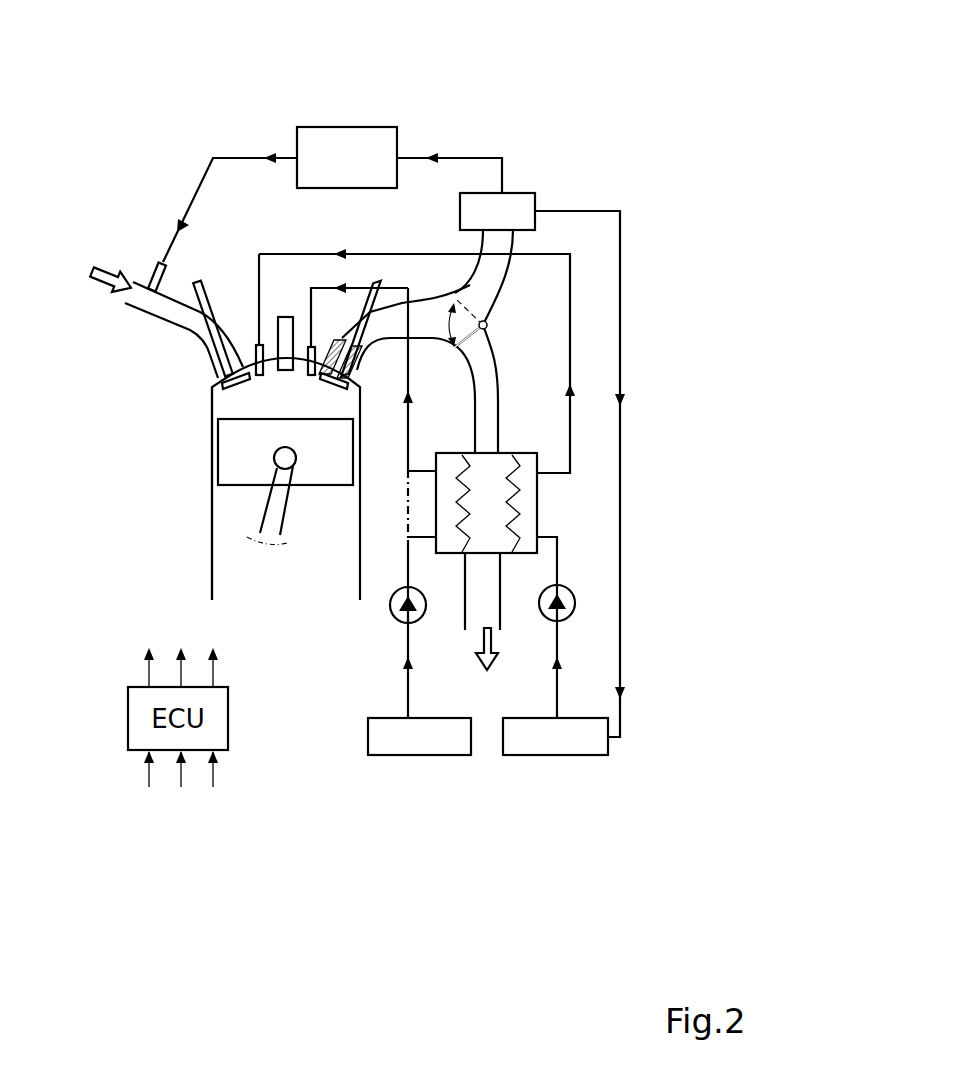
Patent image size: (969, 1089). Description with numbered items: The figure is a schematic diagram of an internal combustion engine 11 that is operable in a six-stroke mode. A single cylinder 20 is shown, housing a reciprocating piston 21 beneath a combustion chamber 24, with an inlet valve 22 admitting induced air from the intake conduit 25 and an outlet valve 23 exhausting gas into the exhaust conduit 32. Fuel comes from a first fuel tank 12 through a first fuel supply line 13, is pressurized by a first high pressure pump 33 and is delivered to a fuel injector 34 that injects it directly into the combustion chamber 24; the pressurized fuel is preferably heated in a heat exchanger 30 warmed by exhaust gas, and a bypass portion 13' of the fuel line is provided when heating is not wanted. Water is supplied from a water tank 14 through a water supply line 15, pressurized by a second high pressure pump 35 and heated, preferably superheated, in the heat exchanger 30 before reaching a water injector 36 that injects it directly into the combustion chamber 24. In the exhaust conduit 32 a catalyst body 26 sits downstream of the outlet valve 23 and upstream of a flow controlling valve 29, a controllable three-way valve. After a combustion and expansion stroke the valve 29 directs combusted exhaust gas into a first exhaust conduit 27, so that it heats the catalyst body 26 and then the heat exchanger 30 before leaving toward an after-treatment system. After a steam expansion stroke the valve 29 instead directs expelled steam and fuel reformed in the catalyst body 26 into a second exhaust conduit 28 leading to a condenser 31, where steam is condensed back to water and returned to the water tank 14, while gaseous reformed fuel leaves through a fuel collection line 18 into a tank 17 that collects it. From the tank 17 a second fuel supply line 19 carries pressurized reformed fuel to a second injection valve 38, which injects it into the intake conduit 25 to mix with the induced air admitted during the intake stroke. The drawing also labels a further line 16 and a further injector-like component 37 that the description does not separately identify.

The internal combustion engine 11 is at (568, 80).
The first fuel tank 12 is at (421, 748).
The first fuel supply line 13 is at (374, 507).
The bypass portion 13' is at (354, 553).
The water tank 14 is at (563, 745).
The water supply line 15 is at (600, 210).
The return line 16 is at (557, 686).
The tank 17 is at (370, 128).
The fuel collection line 18 is at (458, 158).
The second fuel supply line 19 is at (245, 155).
The cylinder 20 is at (183, 509).
The piston 21 is at (233, 459).
The inlet valve 22 is at (220, 346).
The outlet valve 23 is at (455, 298).
The combustion chamber 24 is at (233, 402).
The intake conduit 25 is at (153, 318).
The catalyst body 26 is at (357, 369).
The first exhaust conduit 27 is at (487, 413).
The second exhaust conduit 28 is at (500, 243).
The flow controlling valve 29 is at (500, 325).
The heat exchanger 30 is at (537, 505).
The condenser 31 is at (515, 200).
The exhaust conduit 32 is at (402, 334).
The first high pressure pump 33 is at (390, 610).
The fuel injector 34 is at (287, 333).
The second high pressure pump 35 is at (575, 603).
The water injector 36 is at (255, 338).
The second injector 37 is at (308, 343).
The second injection valve 38 is at (150, 274).